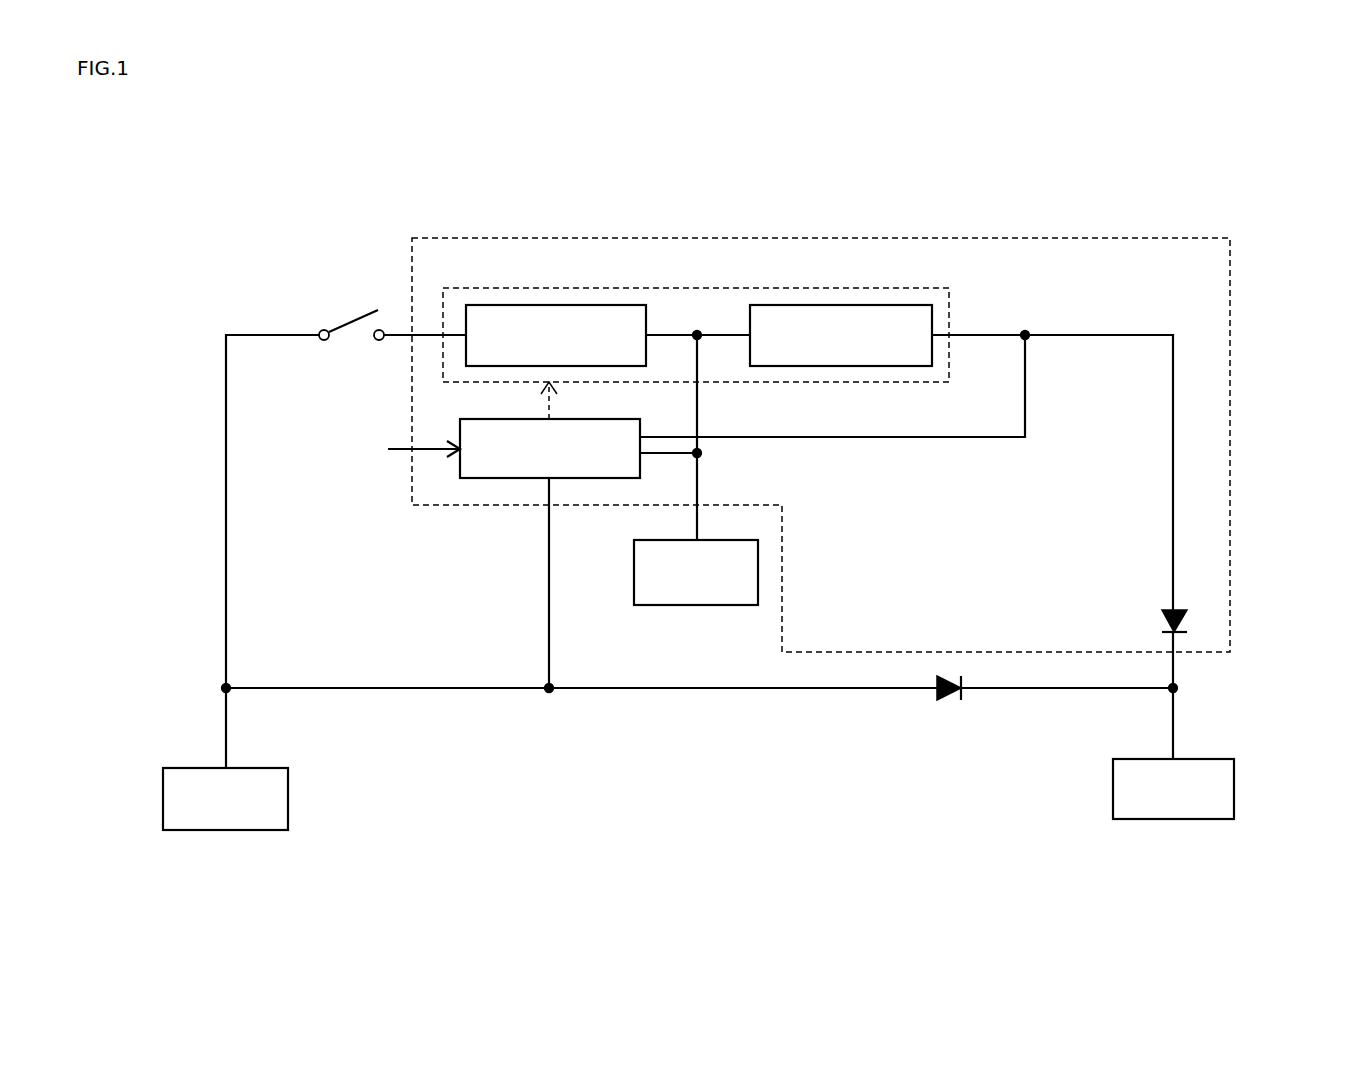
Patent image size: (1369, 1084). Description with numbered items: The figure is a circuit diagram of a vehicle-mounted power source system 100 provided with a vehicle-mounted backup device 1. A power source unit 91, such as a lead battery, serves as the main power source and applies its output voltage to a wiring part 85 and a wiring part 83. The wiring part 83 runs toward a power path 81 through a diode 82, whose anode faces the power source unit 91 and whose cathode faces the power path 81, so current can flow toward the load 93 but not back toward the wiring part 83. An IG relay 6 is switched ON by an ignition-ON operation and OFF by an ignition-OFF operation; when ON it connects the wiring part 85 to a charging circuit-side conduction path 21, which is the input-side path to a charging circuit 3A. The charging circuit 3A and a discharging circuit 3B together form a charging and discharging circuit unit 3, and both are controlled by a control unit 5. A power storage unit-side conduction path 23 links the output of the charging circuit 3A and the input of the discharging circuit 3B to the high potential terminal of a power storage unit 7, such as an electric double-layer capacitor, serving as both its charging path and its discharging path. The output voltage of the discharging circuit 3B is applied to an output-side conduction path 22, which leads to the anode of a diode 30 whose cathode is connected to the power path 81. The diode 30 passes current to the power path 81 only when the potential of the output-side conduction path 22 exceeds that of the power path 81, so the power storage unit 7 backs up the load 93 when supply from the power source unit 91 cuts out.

The vehicle-mounted backup device 1 is at (1183, 237).
The charging and discharging circuit unit 3 is at (712, 287).
The charging circuit 3A is at (566, 305).
The discharging circuit 3B is at (839, 305).
The control unit 5 is at (500, 478).
The IG relay 6 is at (357, 320).
The power storage unit 7 is at (714, 605).
The charging circuit-side conduction path 21 is at (428, 333).
The output-side conduction path 22 is at (992, 335).
The power storage unit-side conduction path 23 is at (697, 476).
The diode 30 is at (1187, 620).
The power path 81 is at (1073, 690).
The diode 82 is at (947, 700).
The wiring part 83 is at (838, 690).
The wiring part 85 is at (226, 410).
The power source unit 91 is at (220, 830).
The load 93 is at (1178, 819).
The vehicle-mounted power source system 100 is at (1210, 142).